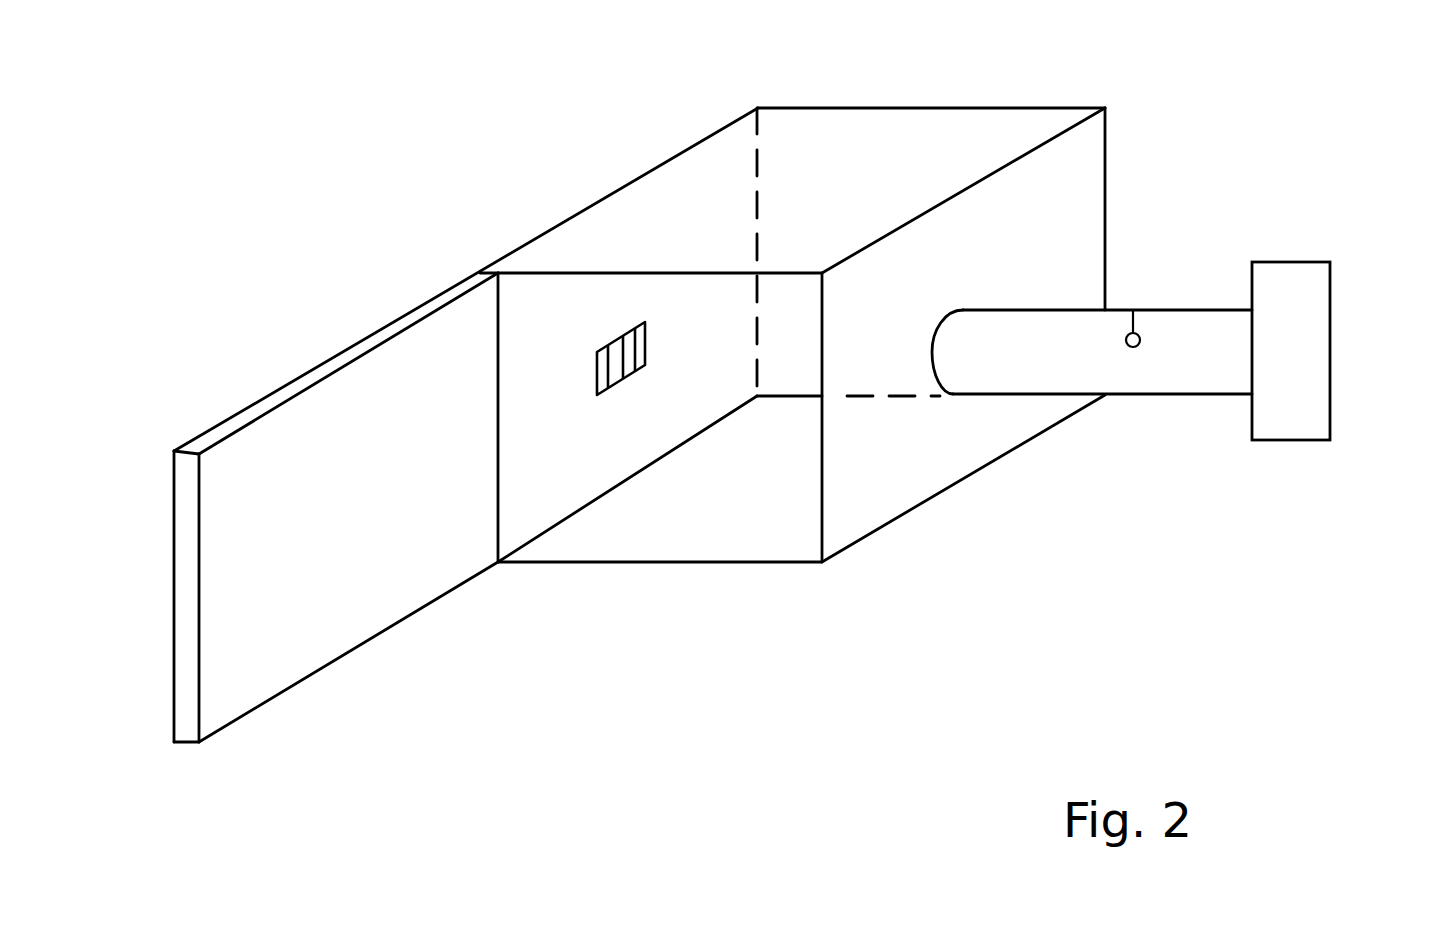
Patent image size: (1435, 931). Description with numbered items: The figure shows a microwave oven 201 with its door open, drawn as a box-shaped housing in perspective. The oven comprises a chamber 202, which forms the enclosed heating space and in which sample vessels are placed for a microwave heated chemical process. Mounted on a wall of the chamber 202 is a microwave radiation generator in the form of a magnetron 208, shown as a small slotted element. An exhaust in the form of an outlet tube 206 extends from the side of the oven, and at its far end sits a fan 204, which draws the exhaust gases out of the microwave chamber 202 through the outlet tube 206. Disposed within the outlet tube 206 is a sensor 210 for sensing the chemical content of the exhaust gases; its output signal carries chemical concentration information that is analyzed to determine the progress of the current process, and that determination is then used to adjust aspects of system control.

The microwave oven 201 is at (760, 297).
The chamber 202 is at (530, 507).
The fan 204 is at (1336, 423).
The outlet tube 206 is at (1092, 442).
The magnetron 208 is at (505, 228).
The sensor 210 is at (1243, 256).